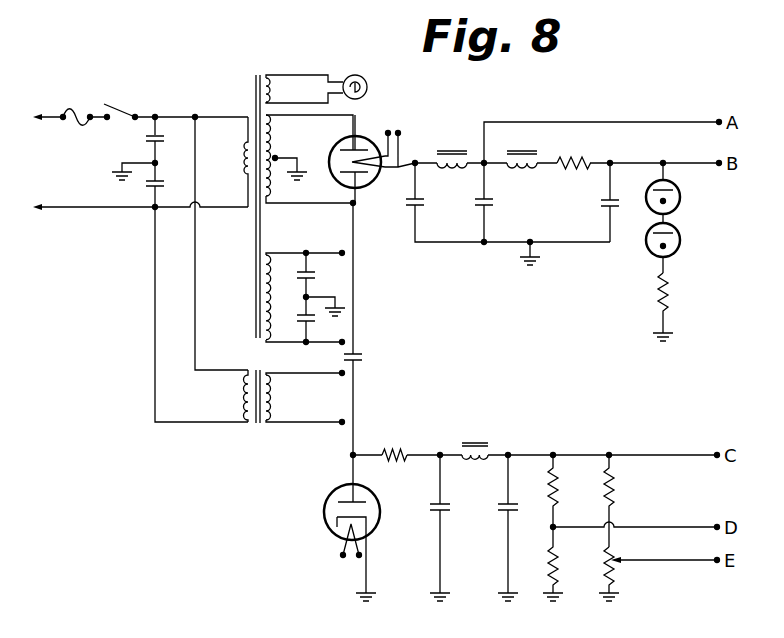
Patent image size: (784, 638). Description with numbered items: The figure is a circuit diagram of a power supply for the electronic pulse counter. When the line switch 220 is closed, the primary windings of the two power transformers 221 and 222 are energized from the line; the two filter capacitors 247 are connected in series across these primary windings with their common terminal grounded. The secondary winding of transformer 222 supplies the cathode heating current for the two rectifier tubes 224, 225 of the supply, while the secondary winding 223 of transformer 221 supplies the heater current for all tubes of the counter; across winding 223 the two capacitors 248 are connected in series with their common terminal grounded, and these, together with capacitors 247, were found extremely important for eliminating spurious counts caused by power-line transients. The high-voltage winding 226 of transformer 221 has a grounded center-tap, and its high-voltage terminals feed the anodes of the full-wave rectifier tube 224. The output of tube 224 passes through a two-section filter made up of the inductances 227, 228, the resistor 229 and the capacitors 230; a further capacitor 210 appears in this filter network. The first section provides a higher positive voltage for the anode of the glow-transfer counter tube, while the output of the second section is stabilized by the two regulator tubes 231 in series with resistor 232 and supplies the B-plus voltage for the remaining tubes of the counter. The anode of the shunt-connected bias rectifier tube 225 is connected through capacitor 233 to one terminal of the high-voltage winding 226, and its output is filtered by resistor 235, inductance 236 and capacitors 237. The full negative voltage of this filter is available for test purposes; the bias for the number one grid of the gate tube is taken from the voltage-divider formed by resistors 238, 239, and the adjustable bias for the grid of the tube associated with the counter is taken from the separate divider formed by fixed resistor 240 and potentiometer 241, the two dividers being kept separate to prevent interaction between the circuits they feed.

The line switch 220 is at (146, 87).
The filter capacitors 247 is at (158, 136).
The transformer 221 is at (255, 277).
The high-voltage winding 226 is at (275, 156).
The secondary winding 223 is at (262, 308).
The filter capacitors 248 is at (308, 272).
The transformer 222 is at (255, 427).
The full-wave rectifier tube 224 is at (370, 188).
The inductance 227 is at (443, 149).
The inductance 228 is at (521, 168).
The resistor 229 is at (581, 160).
The capacitors 230 is at (461, 212).
The capacitor 210 is at (602, 207).
The regulator tubes 231 is at (679, 202).
The resistor 232 is at (665, 300).
The capacitor 233 is at (365, 358).
The resistor 235 is at (395, 448).
The inductance 236 is at (517, 432).
The capacitors 237 is at (447, 515).
The bias rectifier tube 225 is at (323, 503).
The resistor 238 is at (557, 475).
The resistor 239 is at (563, 562).
The fixed resistor 240 is at (613, 499).
The potentiometer 241 is at (614, 568).